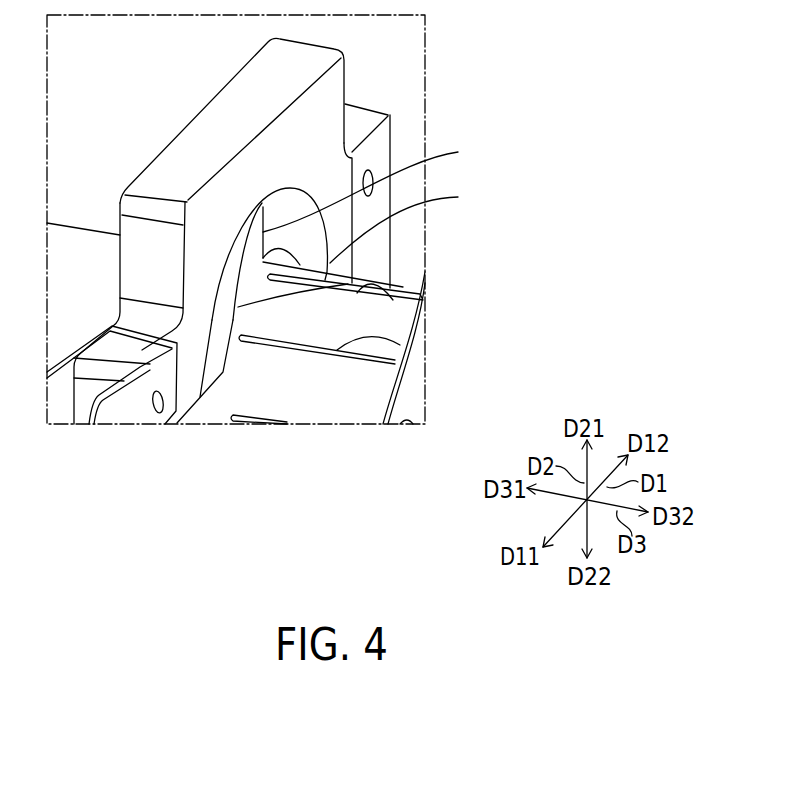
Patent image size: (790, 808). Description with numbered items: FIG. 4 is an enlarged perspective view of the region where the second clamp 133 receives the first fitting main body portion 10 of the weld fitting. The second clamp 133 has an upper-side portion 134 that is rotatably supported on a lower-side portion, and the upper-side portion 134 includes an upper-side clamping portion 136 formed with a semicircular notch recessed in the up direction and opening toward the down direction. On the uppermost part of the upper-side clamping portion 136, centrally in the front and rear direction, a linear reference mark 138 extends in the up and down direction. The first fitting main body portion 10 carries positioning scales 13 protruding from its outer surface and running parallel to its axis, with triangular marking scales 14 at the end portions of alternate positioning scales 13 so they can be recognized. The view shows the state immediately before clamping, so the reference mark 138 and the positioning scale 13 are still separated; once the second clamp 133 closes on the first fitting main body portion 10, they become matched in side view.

The first fitting main body portion 10 is at (63, 243).
The positioning scales 13 is at (350, 285).
The marking scales 14 is at (424, 297).
The second clamp 133 is at (367, 97).
The upper-side portion 134 is at (203, 128).
The upper-side clamping portion 136 is at (380, 266).
The reference mark 138 is at (380, 186).